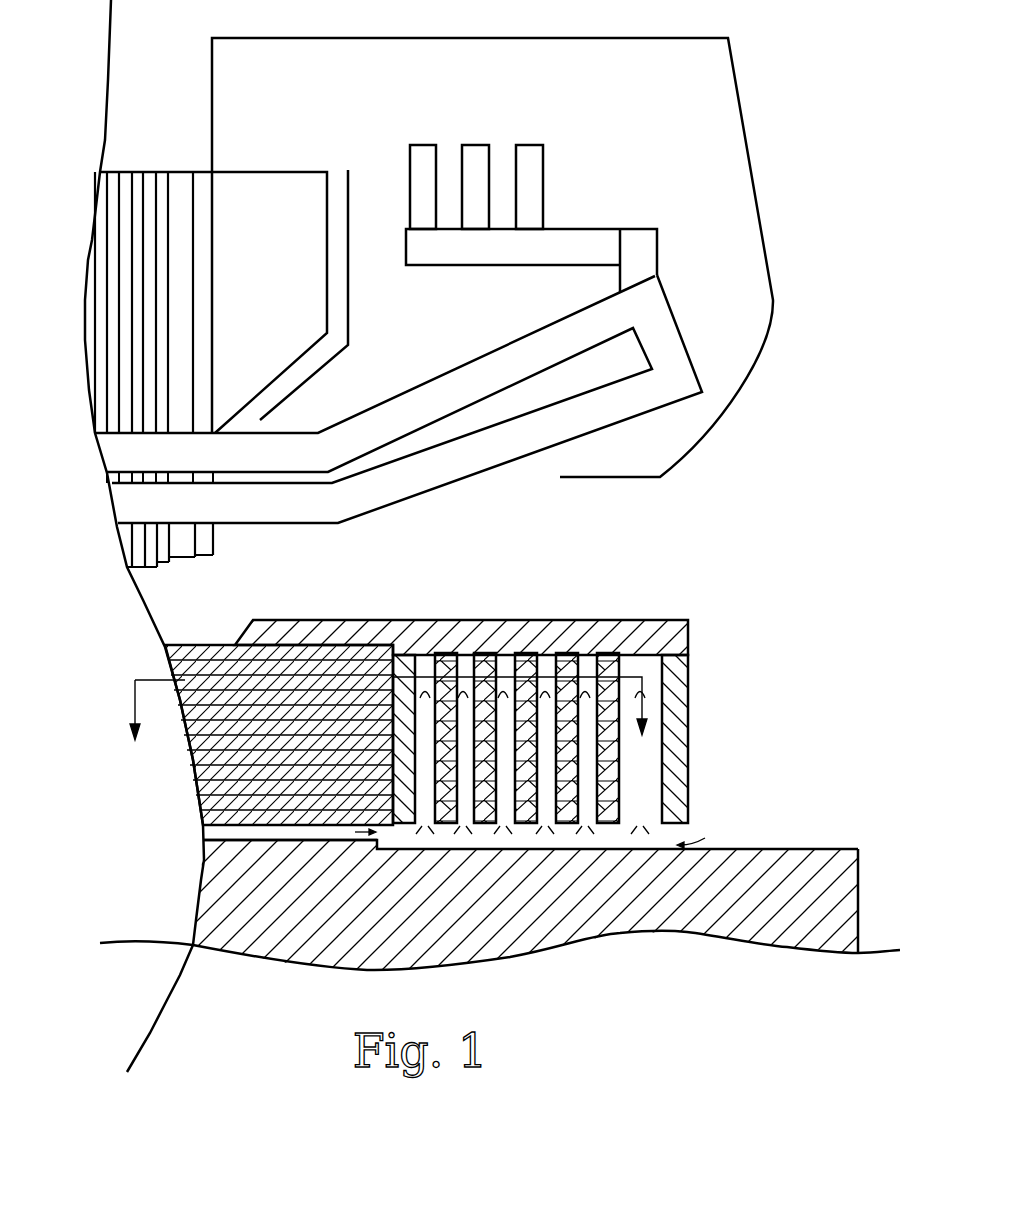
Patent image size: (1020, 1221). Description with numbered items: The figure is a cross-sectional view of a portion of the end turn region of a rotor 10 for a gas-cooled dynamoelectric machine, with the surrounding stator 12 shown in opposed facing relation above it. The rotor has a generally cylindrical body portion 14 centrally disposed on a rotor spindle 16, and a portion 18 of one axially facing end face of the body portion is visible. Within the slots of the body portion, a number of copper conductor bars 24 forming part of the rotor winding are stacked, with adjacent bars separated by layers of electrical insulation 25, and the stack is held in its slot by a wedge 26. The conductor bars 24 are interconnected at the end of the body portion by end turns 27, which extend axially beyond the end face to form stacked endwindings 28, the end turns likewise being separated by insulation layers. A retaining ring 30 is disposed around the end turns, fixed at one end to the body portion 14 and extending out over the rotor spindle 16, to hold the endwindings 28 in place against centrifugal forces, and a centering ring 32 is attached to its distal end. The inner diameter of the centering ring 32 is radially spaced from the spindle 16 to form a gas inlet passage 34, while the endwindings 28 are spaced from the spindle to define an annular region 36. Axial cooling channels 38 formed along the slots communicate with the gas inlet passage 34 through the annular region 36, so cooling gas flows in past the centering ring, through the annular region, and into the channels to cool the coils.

The rotor 10 is at (482, 682).
The stator 12 is at (797, 218).
The body portion 14 is at (208, 890).
The rotor spindle 16 is at (666, 920).
The portion of end face 18 is at (378, 838).
The conductor bars 24 is at (208, 797).
The layers of electrical insulation 25 is at (182, 700).
The wedge 26 is at (172, 652).
The end turns 27 is at (483, 818).
The stacked endwindings 28 is at (612, 829).
The retaining ring 30 is at (475, 630).
The centering ring 32 is at (678, 717).
The gas inlet passage 34 is at (700, 826).
The annular region 36 is at (537, 849).
The axial cooling channels 38 is at (303, 833).